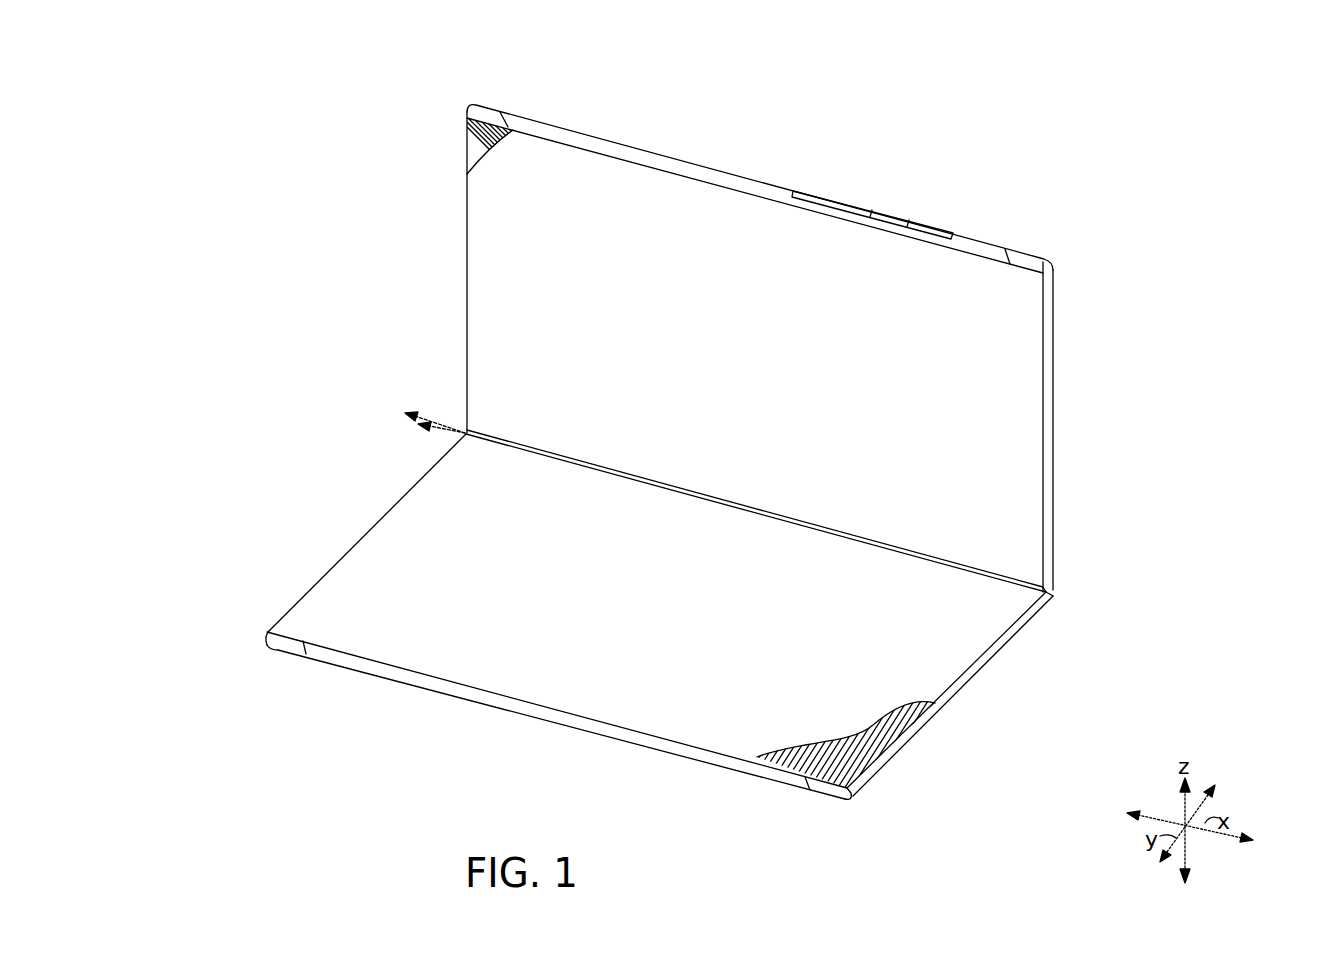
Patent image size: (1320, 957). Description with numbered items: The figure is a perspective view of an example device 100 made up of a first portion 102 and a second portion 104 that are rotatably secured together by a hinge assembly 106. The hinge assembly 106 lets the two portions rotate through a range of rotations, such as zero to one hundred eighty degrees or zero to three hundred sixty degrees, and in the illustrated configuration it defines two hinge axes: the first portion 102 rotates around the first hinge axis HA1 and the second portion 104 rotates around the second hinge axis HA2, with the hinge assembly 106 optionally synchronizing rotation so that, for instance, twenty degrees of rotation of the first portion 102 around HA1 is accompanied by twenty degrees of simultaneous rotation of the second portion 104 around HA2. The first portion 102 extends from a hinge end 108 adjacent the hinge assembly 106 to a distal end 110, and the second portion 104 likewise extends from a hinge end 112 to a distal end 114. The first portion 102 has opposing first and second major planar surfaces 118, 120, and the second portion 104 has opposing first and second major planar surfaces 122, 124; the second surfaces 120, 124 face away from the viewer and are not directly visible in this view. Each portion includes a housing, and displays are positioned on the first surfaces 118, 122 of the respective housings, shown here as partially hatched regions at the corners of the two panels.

The device 100 is at (953, 64).
The first portion 102 is at (748, 166).
The second portion 104 is at (318, 566).
The hinge assembly 106 is at (1058, 594).
The hinge end 108 is at (1054, 590).
The distal end 110 is at (1050, 261).
The hinge end 112 is at (1048, 597).
The distal end 114 is at (852, 794).
The first surface 118 is at (762, 370).
The second surface 120 is at (980, 240).
The first surface 122 is at (680, 646).
The second surface 124 is at (412, 686).
The first hinge axis HA1 is at (429, 409).
The second hinge axis HA2 is at (416, 437).